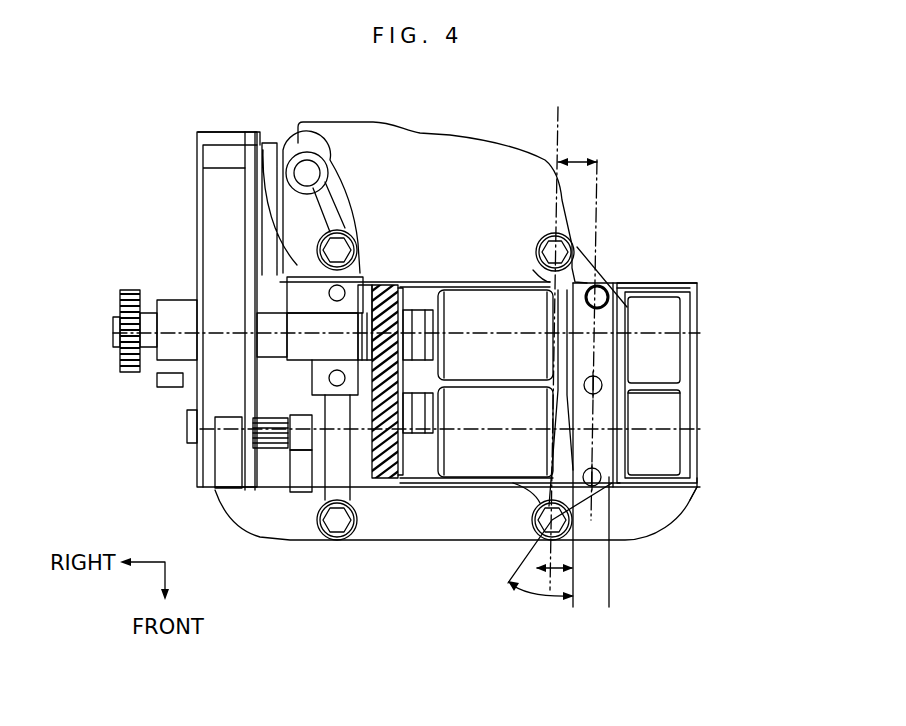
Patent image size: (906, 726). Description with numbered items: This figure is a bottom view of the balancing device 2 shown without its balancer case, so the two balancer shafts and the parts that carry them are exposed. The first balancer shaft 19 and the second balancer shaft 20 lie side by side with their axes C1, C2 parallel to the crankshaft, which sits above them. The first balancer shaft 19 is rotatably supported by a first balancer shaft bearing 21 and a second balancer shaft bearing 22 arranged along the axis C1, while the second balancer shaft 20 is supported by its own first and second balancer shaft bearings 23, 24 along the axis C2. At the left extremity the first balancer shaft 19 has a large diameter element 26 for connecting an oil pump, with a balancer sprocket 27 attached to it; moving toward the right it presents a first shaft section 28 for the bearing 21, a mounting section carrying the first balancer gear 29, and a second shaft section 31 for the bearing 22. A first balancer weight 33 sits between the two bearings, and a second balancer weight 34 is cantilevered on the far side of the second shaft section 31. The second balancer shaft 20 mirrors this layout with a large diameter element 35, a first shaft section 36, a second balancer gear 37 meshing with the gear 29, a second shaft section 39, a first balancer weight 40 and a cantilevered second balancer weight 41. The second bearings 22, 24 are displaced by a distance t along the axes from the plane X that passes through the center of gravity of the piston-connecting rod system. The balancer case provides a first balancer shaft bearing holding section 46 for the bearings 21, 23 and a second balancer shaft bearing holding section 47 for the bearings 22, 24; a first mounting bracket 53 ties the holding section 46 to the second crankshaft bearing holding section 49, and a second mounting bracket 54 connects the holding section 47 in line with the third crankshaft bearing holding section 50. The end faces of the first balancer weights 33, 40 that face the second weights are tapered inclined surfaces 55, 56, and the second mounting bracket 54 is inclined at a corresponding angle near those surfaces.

The compressor unit 2 is at (744, 174).
The first balancer shaft 19 is at (473, 310).
The second balancer shaft 20 is at (490, 463).
The first balancer shaft bearing 21 is at (252, 320).
The second balancer shaft bearing 22 is at (617, 287).
The first balancer shaft bearing 23 is at (320, 490).
The second balancer shaft bearing 24 is at (210, 202).
The large diameter element 26 is at (327, 320).
The balancer sprocket 27 is at (120, 300).
The first shaft section 28 is at (320, 310).
The first balancer gear 29 is at (387, 285).
The second shaft section 31 is at (633, 330).
The first balancer weight 33 is at (497, 300).
The second balancer weight 34 is at (660, 355).
The large diameter element 35 is at (297, 473).
The first shaft section 36 is at (318, 410).
The second balancer gear 37 is at (378, 498).
The second shaft section 39 is at (697, 487).
The first balancer weight 40 is at (457, 470).
The second balancer weight 41 is at (665, 413).
The first balancer shaft bearing holding section 46 is at (330, 538).
The second balancer shaft bearing holding section 47 is at (600, 267).
The second crankshaft bearing holding section 49 is at (360, 243).
The third crankshaft bearing holding section 50 is at (548, 240).
The first mounting bracket 53 is at (268, 185).
The second mounting bracket 54 is at (580, 290).
The inclined surface 55 is at (600, 265).
The inclined surface 56 is at (626, 392).
The axis C1 is at (177, 337).
The axis C2 is at (303, 420).
The plane X is at (549, 337).
The distance t is at (575, 158).